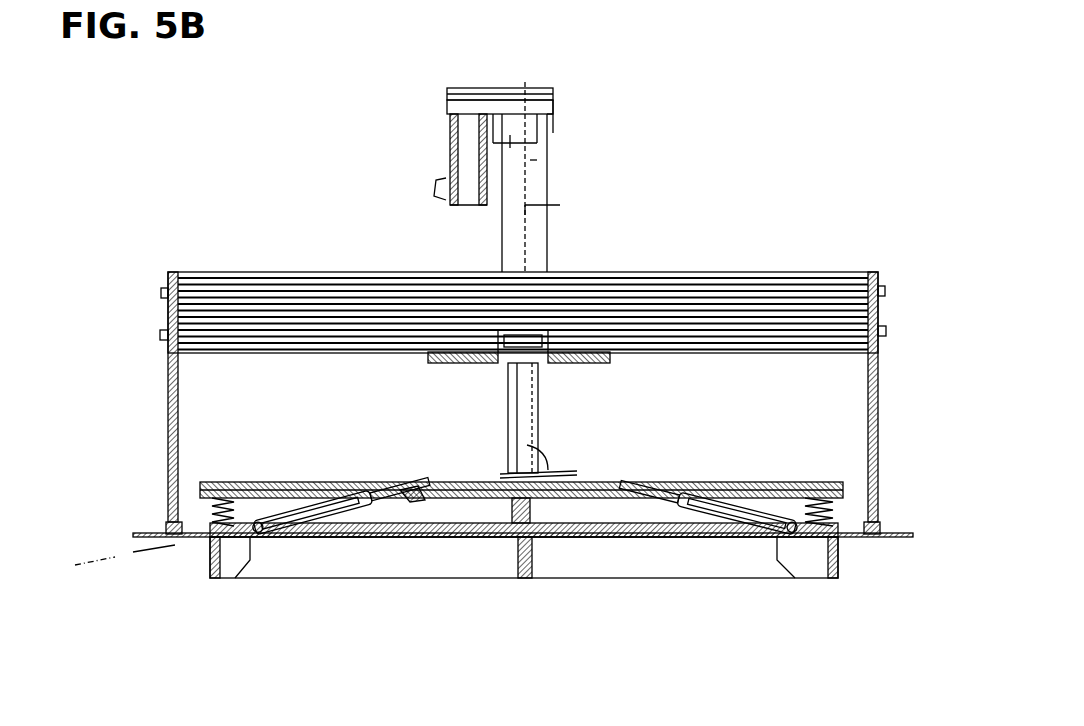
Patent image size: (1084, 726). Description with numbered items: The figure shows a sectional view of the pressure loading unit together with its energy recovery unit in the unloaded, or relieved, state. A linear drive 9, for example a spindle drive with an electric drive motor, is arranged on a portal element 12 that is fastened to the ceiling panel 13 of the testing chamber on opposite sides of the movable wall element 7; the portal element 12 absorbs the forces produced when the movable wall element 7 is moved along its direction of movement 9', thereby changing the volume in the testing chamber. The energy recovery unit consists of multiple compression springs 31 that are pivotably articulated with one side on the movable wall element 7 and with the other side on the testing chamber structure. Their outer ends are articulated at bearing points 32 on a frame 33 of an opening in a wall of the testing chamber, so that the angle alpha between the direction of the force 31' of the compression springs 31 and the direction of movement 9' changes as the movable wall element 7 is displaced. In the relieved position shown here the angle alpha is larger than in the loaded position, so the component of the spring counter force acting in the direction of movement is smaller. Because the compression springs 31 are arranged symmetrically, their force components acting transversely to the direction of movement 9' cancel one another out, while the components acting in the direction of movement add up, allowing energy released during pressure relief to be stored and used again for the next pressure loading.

The linear drive 9 is at (518, 217).
The direction of movement 9' is at (548, 420).
The portal element 12 is at (870, 388).
The movable wall element 7 is at (595, 466).
The ceiling panel 13 is at (877, 540).
The compression springs 31 is at (522, 563).
The direction of the force 31' is at (125, 587).
The bearing points 32 is at (805, 565).
The frame 33 is at (845, 540).